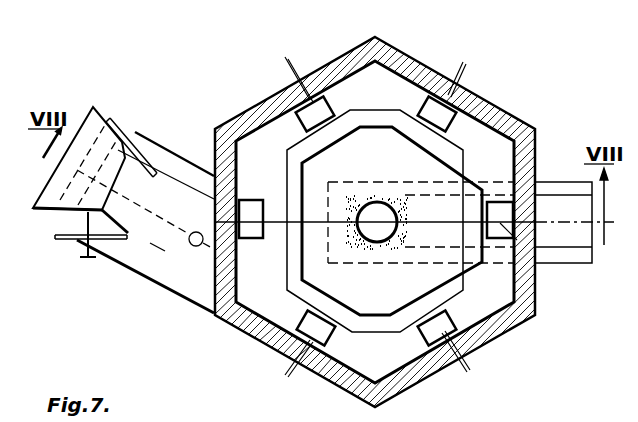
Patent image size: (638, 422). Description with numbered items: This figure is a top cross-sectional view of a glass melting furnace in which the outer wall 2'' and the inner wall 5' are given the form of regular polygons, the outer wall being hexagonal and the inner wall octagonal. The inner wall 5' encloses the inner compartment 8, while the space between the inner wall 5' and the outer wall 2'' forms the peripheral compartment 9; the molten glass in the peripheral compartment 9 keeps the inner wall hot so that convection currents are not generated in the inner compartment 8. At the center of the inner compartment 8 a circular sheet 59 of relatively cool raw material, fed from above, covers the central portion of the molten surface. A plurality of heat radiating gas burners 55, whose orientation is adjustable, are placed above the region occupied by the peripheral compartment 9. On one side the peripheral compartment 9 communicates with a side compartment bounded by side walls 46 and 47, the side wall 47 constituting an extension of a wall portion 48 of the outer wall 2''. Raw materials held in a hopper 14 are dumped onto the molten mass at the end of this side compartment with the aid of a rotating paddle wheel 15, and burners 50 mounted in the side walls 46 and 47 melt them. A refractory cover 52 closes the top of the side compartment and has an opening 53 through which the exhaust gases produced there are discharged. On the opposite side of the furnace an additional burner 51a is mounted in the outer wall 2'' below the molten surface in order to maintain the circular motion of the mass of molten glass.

The hopper 14 is at (84, 132).
The burners 50 is at (128, 130).
The side wall 46 is at (194, 167).
The heat radiating gas burners 55 is at (313, 110).
The peripheral compartment 9 is at (378, 108).
The outer wall 2'' is at (377, 222).
The additional burner 51a is at (536, 131).
The rotating paddle wheel 15 is at (66, 215).
The cover 52 is at (157, 247).
The opening 53 is at (192, 245).
The side wall 47 is at (190, 294).
The wall portion 48 is at (275, 338).
The inner compartment 8 is at (384, 174).
The circular sheet 59 is at (392, 246).
The inner wall 5' is at (392, 245).